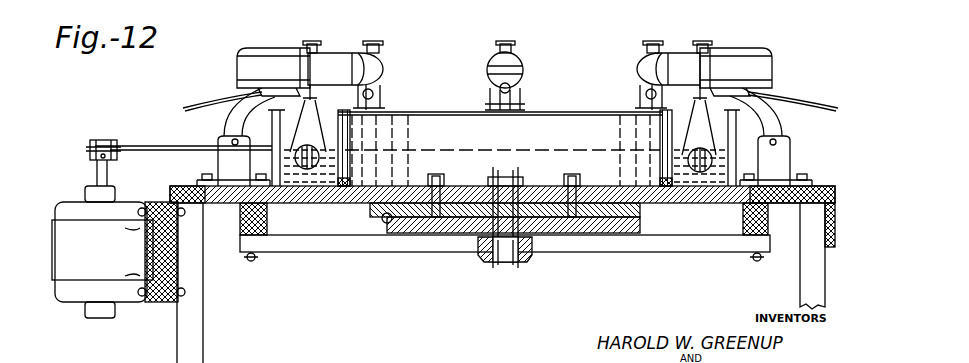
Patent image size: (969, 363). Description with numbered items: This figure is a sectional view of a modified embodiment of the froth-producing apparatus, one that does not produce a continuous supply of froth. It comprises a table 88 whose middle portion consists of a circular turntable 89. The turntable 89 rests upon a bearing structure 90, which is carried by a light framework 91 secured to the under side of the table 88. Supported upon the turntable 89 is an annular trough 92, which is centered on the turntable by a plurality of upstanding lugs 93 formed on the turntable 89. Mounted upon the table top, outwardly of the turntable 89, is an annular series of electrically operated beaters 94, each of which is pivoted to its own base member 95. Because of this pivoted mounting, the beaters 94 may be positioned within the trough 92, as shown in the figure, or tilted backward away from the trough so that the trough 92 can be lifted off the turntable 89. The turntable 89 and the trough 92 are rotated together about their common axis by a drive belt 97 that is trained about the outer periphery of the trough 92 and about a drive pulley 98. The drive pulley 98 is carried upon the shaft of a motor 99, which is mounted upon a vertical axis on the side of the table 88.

The table 88 is at (243, 208).
The circular turntable 89 is at (331, 201).
The bearing structure 90 is at (386, 224).
The light framework 91 is at (661, 247).
The annular trough 92 is at (410, 122).
The upstanding lugs 93 is at (521, 172).
The electrically operated beaters 94 is at (268, 58).
The base member 95 is at (222, 154).
The drive belt 97 is at (145, 145).
The drive pulley 98 is at (99, 140).
The motor 99 is at (80, 300).